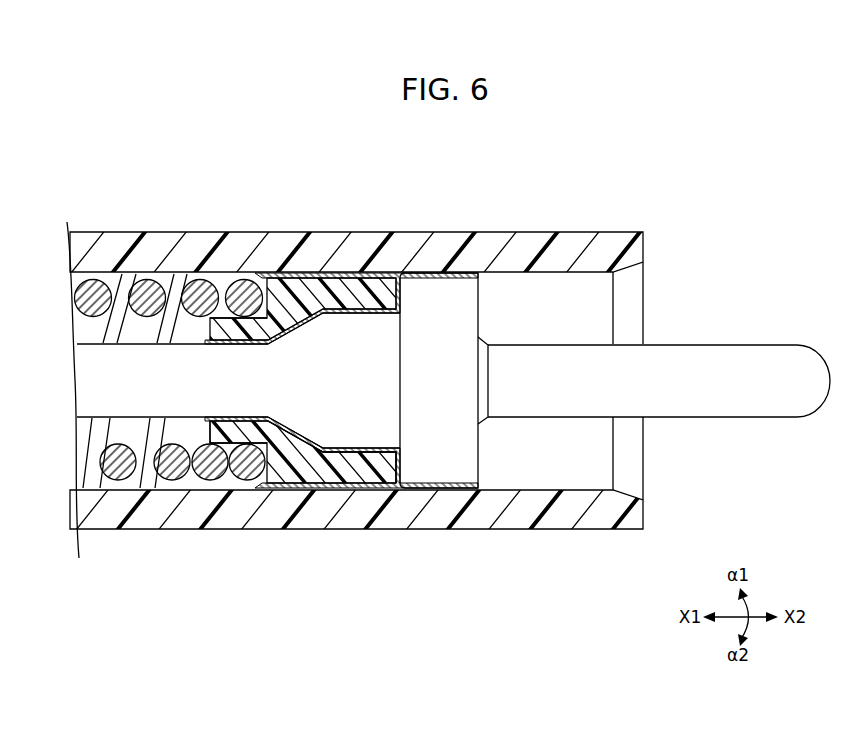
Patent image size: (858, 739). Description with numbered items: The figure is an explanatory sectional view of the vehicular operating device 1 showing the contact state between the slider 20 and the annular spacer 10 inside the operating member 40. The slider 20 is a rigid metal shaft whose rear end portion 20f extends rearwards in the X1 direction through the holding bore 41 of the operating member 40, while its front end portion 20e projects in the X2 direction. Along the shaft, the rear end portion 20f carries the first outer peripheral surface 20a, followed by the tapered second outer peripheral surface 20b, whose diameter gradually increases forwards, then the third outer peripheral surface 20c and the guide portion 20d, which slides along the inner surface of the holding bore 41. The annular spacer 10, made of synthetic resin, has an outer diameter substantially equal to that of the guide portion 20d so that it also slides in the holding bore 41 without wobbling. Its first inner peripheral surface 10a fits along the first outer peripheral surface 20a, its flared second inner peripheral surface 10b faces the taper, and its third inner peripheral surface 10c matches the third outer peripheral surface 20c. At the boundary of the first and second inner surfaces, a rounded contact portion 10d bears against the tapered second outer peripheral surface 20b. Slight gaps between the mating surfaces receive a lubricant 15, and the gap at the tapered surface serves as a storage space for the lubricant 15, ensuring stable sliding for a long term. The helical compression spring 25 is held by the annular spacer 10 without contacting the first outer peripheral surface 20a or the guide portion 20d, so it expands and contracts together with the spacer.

The vehicular operating device 1 is at (198, 170).
The annular spacer 10 is at (357, 287).
The first inner peripheral surface 10a is at (217, 424).
The second inner peripheral surface 10b is at (303, 485).
The third inner peripheral surface 10c is at (385, 478).
The contact portion 10d is at (275, 330).
The lubricant 15 is at (335, 472).
The slider 20 is at (697, 430).
The first outer peripheral surface 20a is at (168, 343).
The second outer peripheral surface 20b is at (307, 311).
The third outer peripheral surface 20c is at (392, 290).
The guide portion 20d is at (462, 287).
The front end portion 20e is at (785, 374).
The rear end portion 20f is at (156, 408).
The helical compression spring 25 is at (117, 474).
The operating member 40 is at (93, 220).
The holding bore 41 is at (125, 282).